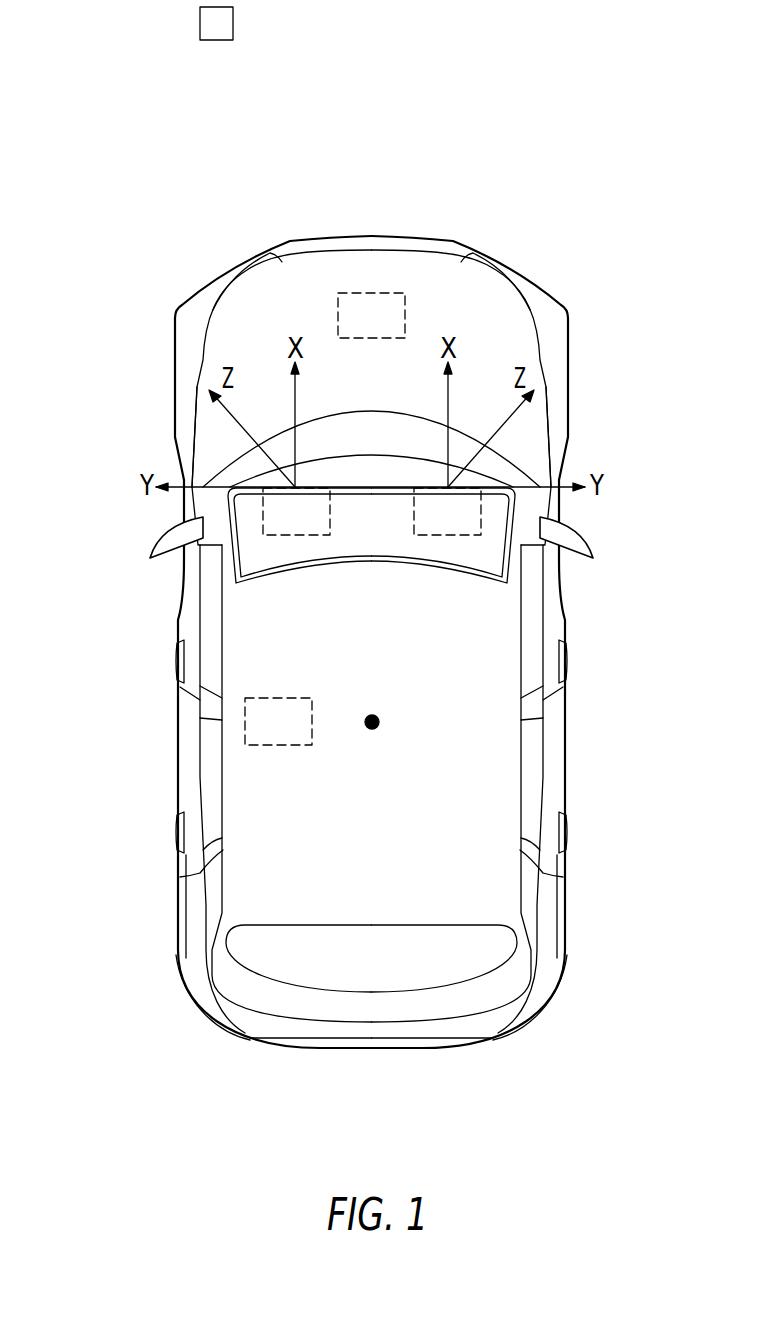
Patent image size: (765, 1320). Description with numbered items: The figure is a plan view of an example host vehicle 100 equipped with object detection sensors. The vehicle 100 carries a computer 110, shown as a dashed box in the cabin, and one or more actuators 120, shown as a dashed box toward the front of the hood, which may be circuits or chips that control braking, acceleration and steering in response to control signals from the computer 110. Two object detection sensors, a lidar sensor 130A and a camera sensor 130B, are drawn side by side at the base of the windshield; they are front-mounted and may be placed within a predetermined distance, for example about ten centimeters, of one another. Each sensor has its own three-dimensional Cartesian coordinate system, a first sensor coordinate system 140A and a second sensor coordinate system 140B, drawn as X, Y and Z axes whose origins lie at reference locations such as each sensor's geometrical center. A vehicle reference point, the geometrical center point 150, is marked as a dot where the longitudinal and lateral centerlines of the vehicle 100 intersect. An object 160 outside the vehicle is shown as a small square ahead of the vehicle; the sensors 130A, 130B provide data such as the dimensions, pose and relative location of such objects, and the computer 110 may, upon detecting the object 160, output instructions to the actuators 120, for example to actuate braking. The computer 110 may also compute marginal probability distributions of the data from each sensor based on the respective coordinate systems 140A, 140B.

The host vehicle 100 is at (392, 841).
The computer 110 is at (278, 721).
The actuators 120 is at (371, 315).
The lidar sensor 130A is at (296, 511).
The camera sensor 130B is at (447, 511).
The first sensor coordinate system 140A is at (213, 430).
The second sensor coordinate system 140B is at (530, 430).
The geometrical center point 150 is at (378, 725).
The object 160 is at (203, 30).